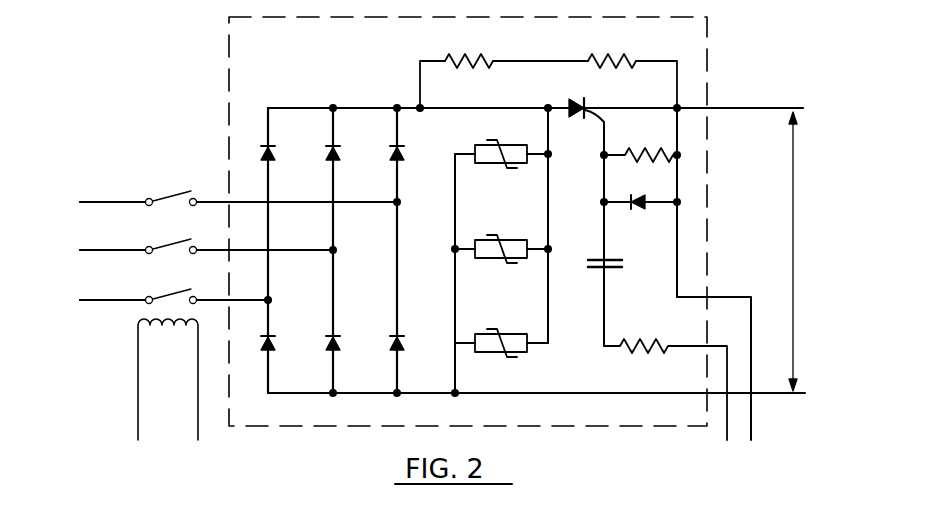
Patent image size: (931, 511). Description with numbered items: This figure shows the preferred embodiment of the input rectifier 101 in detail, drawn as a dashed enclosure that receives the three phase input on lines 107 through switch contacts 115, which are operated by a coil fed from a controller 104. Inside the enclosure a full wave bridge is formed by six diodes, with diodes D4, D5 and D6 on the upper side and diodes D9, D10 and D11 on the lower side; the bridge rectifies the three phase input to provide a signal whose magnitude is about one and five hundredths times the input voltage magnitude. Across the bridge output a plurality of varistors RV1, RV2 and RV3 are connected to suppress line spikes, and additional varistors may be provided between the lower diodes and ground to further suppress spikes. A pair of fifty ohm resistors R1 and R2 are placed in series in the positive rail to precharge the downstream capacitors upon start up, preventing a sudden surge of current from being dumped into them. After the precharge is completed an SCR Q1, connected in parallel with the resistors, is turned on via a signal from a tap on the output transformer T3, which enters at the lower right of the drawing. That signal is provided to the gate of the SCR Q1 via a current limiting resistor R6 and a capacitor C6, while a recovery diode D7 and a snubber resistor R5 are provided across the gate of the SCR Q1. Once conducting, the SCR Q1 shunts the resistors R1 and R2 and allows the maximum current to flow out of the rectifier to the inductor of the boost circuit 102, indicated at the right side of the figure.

The input rectifier 101 is at (228, 21).
The switch contacts 115 is at (168, 195).
The input lines 107 is at (118, 203).
The controller 104 is at (147, 412).
The boost circuit 102 is at (791, 251).
The output transformer T3 is at (714, 476).
The diode D4 is at (281, 155).
The diode D5 is at (346, 155).
The diode D6 is at (410, 155).
The diode D9 is at (281, 345).
The diode D10 is at (350, 345).
The diode D11 is at (414, 345).
The recovery diode D7 is at (640, 193).
The resistor R1 is at (469, 52).
The resistor R2 is at (612, 52).
The snubber resistor R5 is at (640, 147).
The current limiting resistor R6 is at (665, 380).
The SCR Q1 is at (584, 97).
The capacitor C6 is at (618, 265).
The varistor RV1 is at (501, 166).
The varistor RV2 is at (501, 261).
The varistor RV3 is at (501, 355).